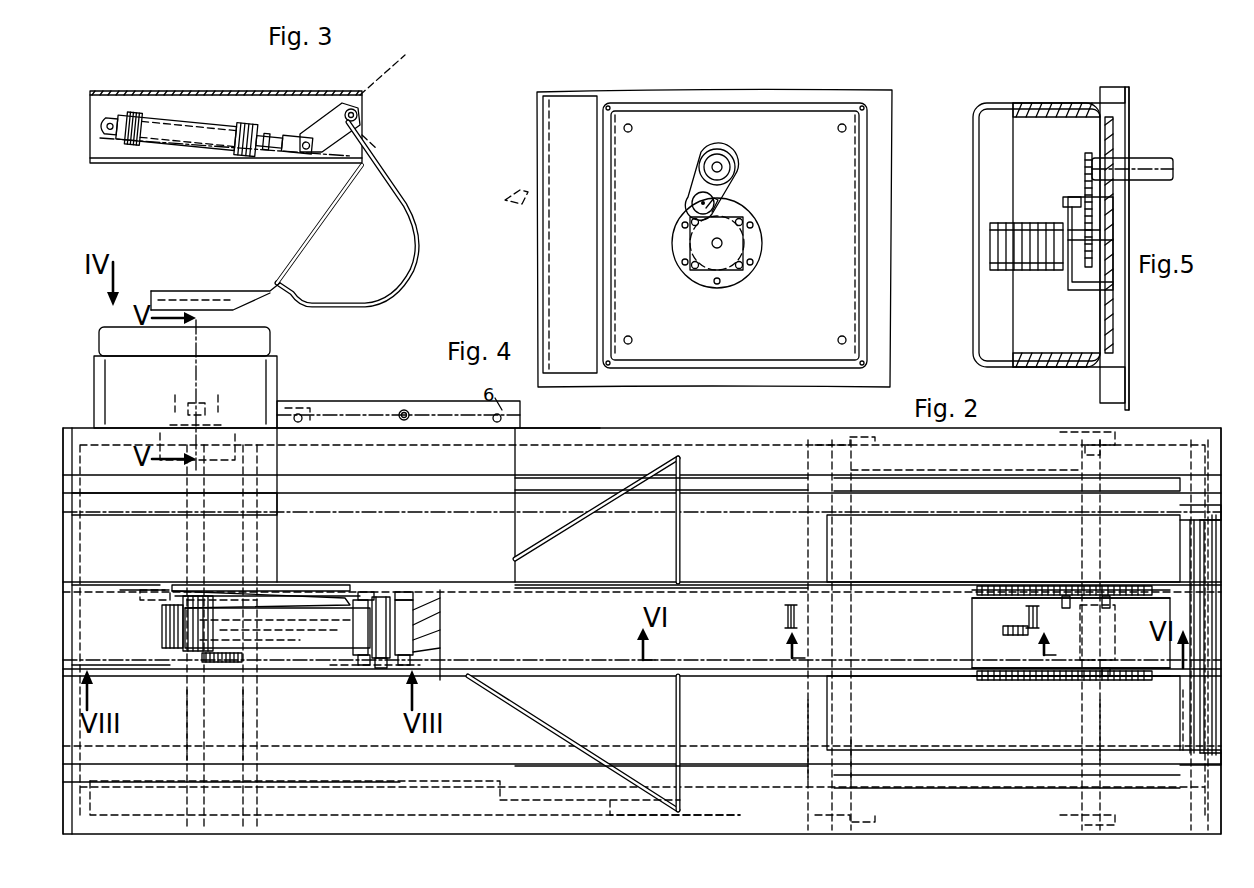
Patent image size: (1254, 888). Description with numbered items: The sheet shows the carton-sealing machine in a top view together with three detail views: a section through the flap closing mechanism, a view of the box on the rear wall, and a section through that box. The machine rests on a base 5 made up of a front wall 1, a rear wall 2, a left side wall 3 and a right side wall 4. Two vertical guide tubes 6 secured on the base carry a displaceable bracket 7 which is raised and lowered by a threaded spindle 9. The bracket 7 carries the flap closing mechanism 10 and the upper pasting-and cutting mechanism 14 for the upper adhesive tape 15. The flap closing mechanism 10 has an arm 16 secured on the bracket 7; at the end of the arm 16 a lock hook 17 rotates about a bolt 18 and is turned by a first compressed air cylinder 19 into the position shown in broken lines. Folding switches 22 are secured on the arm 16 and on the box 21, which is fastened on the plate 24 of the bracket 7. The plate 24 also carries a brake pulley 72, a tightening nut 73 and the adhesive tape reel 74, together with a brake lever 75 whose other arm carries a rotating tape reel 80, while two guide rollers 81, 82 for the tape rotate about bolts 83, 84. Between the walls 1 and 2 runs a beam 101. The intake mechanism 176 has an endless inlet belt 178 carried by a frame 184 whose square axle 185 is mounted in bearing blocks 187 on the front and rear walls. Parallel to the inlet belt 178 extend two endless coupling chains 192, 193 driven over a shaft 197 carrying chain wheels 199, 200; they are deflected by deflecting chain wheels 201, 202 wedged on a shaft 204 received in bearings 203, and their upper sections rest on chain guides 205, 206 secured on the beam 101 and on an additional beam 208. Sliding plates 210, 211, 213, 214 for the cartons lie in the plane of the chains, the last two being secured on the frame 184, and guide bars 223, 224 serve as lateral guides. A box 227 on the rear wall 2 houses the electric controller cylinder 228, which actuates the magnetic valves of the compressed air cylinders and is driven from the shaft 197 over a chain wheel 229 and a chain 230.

In FIG. 2, the front wall 1 is at (498, 830).
In FIG. 4, the rear wall 2 is at (884, 126).
In FIG. 5, the rear wall 2 is at (1128, 350).
In FIG. 2, the rear wall 2 is at (556, 428).
In FIG. 2, the left side wall 3 is at (68, 536).
In FIG. 2, the right side wall 4 is at (1214, 464).
In FIG. 5, the base 5 is at (1142, 412).
In FIG. 4, the vertical guide tubes 6 is at (545, 128).
In FIG. 5, the vertical guide tubes 6 is at (1102, 96).
In FIG. 2, the vertical guide tubes 6 is at (304, 414).
In FIG. 2, the bracket 7 is at (362, 425).
In FIG. 2, the threaded spindle 9 is at (404, 408).
In FIG. 2, the flap closing mechanism 10 is at (766, 578).
In FIG. 2, the upper pasting-and cutting mechanism 14 is at (92, 584).
In FIG. 2, the upper adhesive tape 15 is at (314, 605).
In FIG. 3, the arm 16 is at (112, 160).
In FIG. 2, the arm 16 is at (598, 582).
In FIG. 3, the lock hook 17 is at (400, 172).
In FIG. 4, the lock hook 17 is at (512, 208).
In FIG. 2, the lock hook 17 is at (998, 632).
In FIG. 3, the bolt 18 is at (356, 108).
In FIG. 3, the first compressed air cylinder 19 is at (222, 158).
In FIG. 2, the box 21 is at (108, 647).
In FIG. 2, the folding switches 22 is at (574, 525).
In FIG. 2, the plate 24 is at (134, 590).
In FIG. 2, the brake pulley 72 is at (196, 600).
In FIG. 2, the tightening nut 73 is at (226, 665).
In FIG. 2, the adhesive tape reel 74 is at (178, 652).
In FIG. 2, the brake lever 75 is at (292, 585).
In FIG. 2, the rotating tape reel 80 is at (388, 600).
In FIG. 2, the guide roller 81 is at (368, 597).
In FIG. 2, the guide roller 82 is at (414, 604).
In FIG. 2, the bolt 83 is at (362, 600).
In FIG. 2, the bolt 84 is at (404, 597).
In FIG. 2, the beam 101 is at (250, 735).
In FIG. 2, the intake mechanism 176 is at (1111, 616).
In FIG. 2, the inlet belt 178 is at (1070, 602).
In FIG. 2, the frame 184 is at (885, 470).
In FIG. 2, the square axle 185 is at (851, 738).
In FIG. 2, the bearing blocks 187 is at (870, 432).
In FIG. 2, the coupling chain 192 is at (1038, 586).
In FIG. 2, the coupling chain 193 is at (1036, 673).
In FIG. 4, the shaft 197 is at (720, 166).
In FIG. 5, the shaft 197 is at (1148, 163).
In FIG. 2, the shaft 197 is at (185, 733).
In FIG. 2, the chain wheel 199 is at (140, 596).
In FIG. 2, the chain wheel 200 is at (150, 660).
In FIG. 2, the deflecting chain wheel 201 is at (1098, 596).
In FIG. 2, the deflecting chain wheel 202 is at (1098, 682).
In FIG. 2, the bearings 203 is at (1060, 445).
In FIG. 2, the shaft 204 is at (1100, 740).
In FIG. 2, the chain guide 205 is at (982, 590).
In FIG. 2, the chain guide 206 is at (1003, 693).
In FIG. 2, the additional beam 208 is at (805, 740).
In FIG. 2, the sliding plate 210 is at (233, 574).
In FIG. 2, the sliding plate 211 is at (387, 731).
In FIG. 2, the sliding plate 213 is at (932, 571).
In FIG. 2, the sliding plate 214 is at (953, 712).
In FIG. 2, the guide bar 223 is at (722, 760).
In FIG. 2, the guide bar 224 is at (716, 514).
In FIG. 4, the box 227 is at (880, 222).
In FIG. 5, the box 227 is at (996, 110).
In FIG. 2, the box 227 is at (275, 382).
In FIG. 4, the electric controller cylinder 228 is at (707, 274).
In FIG. 5, the electric controller cylinder 228 is at (1040, 275).
In FIG. 4, the chain wheel 229 is at (732, 170).
In FIG. 5, the chain wheel 229 is at (1084, 162).
In FIG. 4, the chain 230 is at (737, 195).
In FIG. 5, the chain 230 is at (1080, 186).